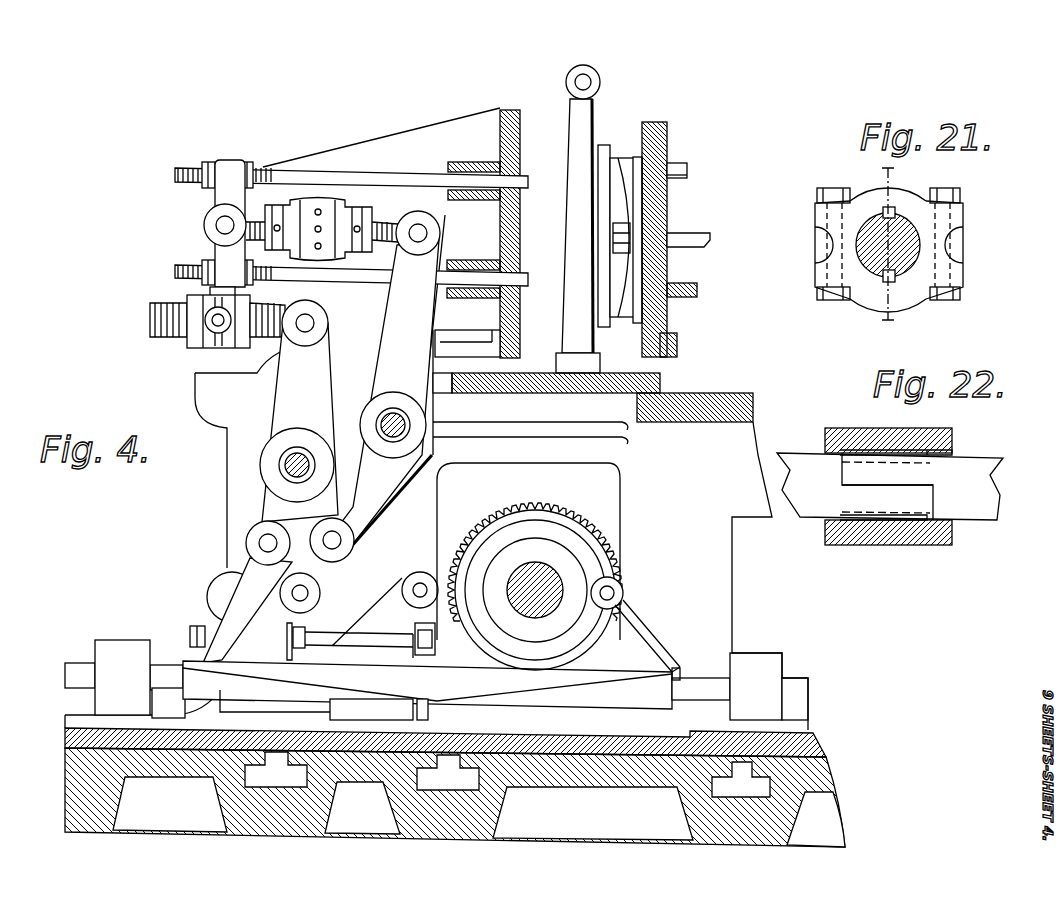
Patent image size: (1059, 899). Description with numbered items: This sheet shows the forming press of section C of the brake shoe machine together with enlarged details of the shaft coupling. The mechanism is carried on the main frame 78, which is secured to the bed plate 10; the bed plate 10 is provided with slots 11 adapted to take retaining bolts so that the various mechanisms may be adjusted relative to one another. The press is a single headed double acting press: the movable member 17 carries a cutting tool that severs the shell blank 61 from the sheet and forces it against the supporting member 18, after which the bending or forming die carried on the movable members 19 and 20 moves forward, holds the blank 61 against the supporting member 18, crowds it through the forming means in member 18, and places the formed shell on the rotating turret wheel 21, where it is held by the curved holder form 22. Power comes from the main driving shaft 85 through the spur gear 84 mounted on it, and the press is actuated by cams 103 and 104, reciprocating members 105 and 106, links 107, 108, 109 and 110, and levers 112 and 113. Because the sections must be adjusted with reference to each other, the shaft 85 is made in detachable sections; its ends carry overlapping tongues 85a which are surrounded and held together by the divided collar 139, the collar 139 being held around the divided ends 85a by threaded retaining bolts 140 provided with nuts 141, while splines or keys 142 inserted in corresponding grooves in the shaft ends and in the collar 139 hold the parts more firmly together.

In FIG. 4, the bed plate 10 is at (80, 777).
In FIG. 4, the slots 11 is at (263, 773).
In FIG. 4, the movable member 17 is at (350, 157).
In FIG. 4, the supporting member 18 is at (583, 135).
In FIG. 4, the movable member 19 is at (297, 177).
In FIG. 4, the movable member 20 is at (323, 278).
In FIG. 4, the turret wheel 21 is at (667, 147).
In FIG. 4, the holder form 22 is at (627, 177).
In FIG. 21, the holder form 22 is at (891, 246).
In FIG. 4, the shell blank 61 is at (610, 145).
In FIG. 4, the main frame 78 is at (242, 445).
In FIG. 4, the spur gear 84 is at (587, 538).
In FIG. 4, the main driving shaft 85 is at (547, 585).
In FIG. 21, the main driving shaft 85 is at (897, 253).
In FIG. 22, the main driving shaft 85 is at (787, 455).
In FIG. 22, the overlapping tongues 85a is at (890, 495).
In FIG. 4, the cam 103 is at (553, 527).
In FIG. 4, the cam 104 is at (478, 540).
In FIG. 4, the reciprocating member 105 is at (643, 618).
In FIG. 4, the reciprocating member 106 is at (640, 650).
In FIG. 4, the link 107 is at (303, 600).
In FIG. 4, the link 108 is at (330, 565).
In FIG. 4, the link 109 is at (260, 373).
In FIG. 4, the link 110 is at (393, 200).
In FIG. 4, the lever 112 is at (299, 411).
In FIG. 4, the lever 113 is at (381, 379).
In FIG. 21, the divided collar 139 is at (860, 202).
In FIG. 22, the divided collar 139 is at (875, 440).
In FIG. 21, the retaining bolts 140 is at (850, 243).
In FIG. 21, the nuts 141 is at (823, 292).
In FIG. 21, the splines or keys 142 is at (893, 212).
In FIG. 22, the splines or keys 142 is at (927, 457).